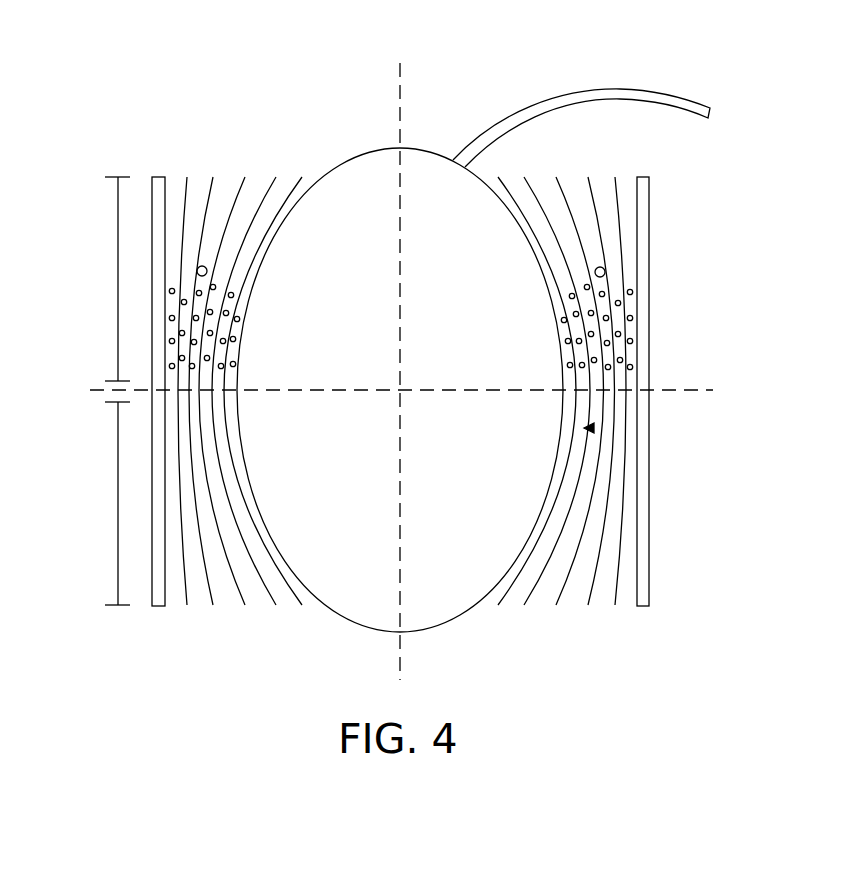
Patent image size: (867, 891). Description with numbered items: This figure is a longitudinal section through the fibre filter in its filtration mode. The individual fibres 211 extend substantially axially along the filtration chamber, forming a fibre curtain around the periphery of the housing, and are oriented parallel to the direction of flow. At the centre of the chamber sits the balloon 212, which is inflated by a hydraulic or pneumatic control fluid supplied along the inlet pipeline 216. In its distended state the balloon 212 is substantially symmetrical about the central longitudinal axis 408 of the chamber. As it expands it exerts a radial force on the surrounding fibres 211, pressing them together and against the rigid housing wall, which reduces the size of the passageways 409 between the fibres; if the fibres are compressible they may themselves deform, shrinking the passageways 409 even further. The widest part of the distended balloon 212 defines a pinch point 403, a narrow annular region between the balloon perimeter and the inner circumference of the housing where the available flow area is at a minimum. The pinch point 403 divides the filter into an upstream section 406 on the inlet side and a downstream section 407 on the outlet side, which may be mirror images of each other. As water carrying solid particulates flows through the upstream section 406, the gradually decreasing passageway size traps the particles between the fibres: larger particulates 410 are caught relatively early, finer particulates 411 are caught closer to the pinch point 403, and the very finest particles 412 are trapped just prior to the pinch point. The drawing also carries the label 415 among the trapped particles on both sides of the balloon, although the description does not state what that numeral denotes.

The inlet pipeline 216 is at (553, 98).
The passageways 409 is at (609, 215).
The larger particulates 410 is at (605, 272).
The finer particulates 411 is at (622, 303).
The very finest particles 412 is at (634, 341).
The pores 415 is at (586, 366).
The pinch point 403 is at (592, 428).
The fibres 211 is at (597, 478).
The balloon 212 is at (452, 605).
The central longitudinal axis 408 is at (398, 294).
The upstream section 406 is at (102, 279).
The downstream section 407 is at (102, 503).